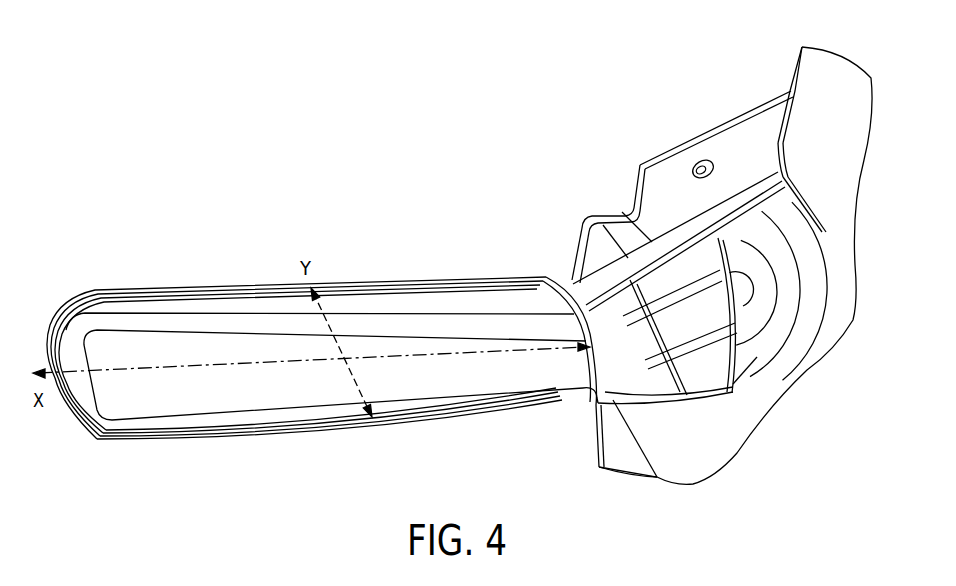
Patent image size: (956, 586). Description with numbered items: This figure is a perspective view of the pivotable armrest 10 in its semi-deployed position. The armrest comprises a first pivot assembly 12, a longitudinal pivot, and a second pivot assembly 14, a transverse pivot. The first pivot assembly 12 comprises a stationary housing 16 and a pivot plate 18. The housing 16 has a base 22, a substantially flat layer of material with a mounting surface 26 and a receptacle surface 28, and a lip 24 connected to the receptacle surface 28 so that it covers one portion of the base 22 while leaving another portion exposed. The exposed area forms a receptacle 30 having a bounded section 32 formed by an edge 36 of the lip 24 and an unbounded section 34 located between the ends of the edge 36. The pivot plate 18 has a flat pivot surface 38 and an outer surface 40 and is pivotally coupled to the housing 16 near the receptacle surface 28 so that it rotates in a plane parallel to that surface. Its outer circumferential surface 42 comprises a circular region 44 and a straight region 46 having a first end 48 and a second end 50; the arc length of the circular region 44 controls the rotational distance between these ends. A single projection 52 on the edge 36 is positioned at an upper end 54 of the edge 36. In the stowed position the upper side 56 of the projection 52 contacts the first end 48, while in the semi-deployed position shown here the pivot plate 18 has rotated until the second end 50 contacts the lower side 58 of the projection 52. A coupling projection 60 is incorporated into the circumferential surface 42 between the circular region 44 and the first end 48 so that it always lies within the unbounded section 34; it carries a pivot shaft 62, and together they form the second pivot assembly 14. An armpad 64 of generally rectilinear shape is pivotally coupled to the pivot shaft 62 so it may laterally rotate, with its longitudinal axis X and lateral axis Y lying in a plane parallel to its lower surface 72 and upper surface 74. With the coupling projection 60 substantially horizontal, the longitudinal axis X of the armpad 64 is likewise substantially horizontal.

The pivotable armrest 10 is at (116, 285).
The first pivot assembly 12 is at (810, 280).
The second pivot assembly 14 is at (600, 447).
The stationary housing 16 is at (872, 78).
The pivot plate 18 is at (733, 347).
The base 22 is at (773, 100).
The lip 24 is at (782, 137).
The mounting surface 26 is at (661, 152).
The receptacle surface 28 is at (648, 178).
The receptacle 30 is at (708, 146).
The bounded section 32 is at (790, 187).
The unbounded section 34 is at (600, 243).
The edge 36 is at (783, 167).
The pivot surface 38 is at (608, 222).
The outer surface 40 is at (733, 312).
The outer circumferential surface 42 is at (636, 205).
The circular region 44 is at (823, 250).
The straight region 46 is at (690, 224).
The first end 48 is at (548, 282).
The second end 50 is at (762, 197).
The projection 52 is at (773, 153).
The upper end 54 is at (793, 85).
The upper side 56 is at (791, 100).
The lower side 58 is at (810, 195).
The coupling projection 60 is at (627, 347).
The pivot shaft 62 is at (592, 390).
The armpad 64 is at (214, 400).
The lower surface 72 is at (204, 290).
The upper surface 74 is at (380, 385).